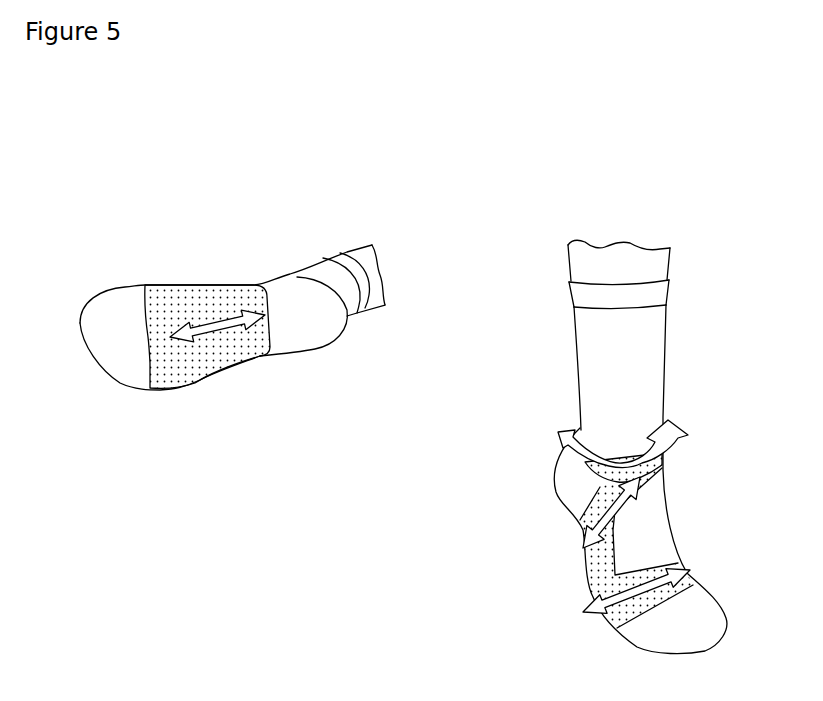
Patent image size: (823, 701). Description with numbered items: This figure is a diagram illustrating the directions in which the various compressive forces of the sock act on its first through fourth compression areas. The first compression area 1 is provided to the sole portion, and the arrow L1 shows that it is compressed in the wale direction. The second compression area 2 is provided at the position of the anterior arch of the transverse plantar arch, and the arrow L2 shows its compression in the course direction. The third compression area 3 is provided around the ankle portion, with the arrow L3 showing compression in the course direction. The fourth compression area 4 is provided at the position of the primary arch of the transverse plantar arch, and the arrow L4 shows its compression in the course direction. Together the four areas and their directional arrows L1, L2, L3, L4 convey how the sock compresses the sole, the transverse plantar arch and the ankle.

The first compression area 1 is at (187, 377).
The second compression area 2 is at (607, 620).
The third compression area 3 is at (658, 460).
The fourth compression area 4 is at (601, 489).
The compression direction of the first compression area L1 is at (215, 328).
The compression direction of the second compression area L2 is at (677, 563).
The compression direction of the third compression area L3 is at (677, 423).
The compression direction of the fourth compression area L4 is at (587, 525).